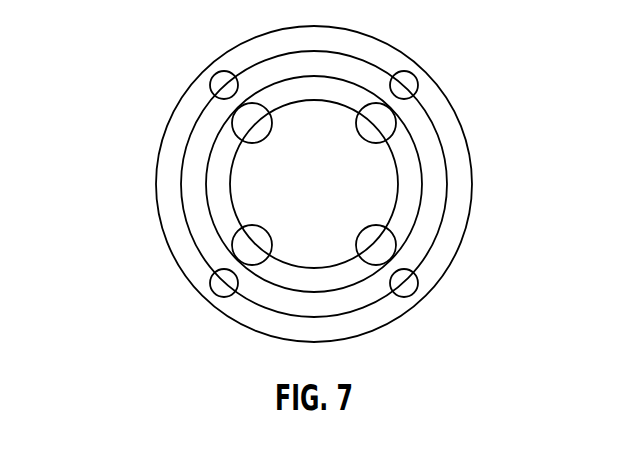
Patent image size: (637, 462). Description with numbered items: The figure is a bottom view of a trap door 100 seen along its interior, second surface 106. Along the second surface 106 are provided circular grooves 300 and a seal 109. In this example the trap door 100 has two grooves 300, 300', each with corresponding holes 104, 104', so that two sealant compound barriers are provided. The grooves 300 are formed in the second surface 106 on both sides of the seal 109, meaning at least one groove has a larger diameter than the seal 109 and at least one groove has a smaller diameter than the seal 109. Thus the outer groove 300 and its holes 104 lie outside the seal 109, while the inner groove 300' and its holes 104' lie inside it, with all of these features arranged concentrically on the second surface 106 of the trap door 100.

The trap door 100 is at (106, 33).
The second surface 106 is at (461, 233).
The circular groove 300 is at (280, 184).
The seal 109 is at (212, 145).
The second groove 300' is at (359, 152).
The holes 104 is at (274, 196).
The holes 104' is at (372, 199).